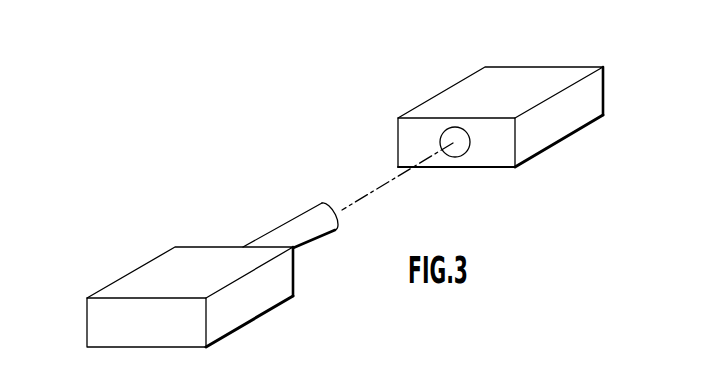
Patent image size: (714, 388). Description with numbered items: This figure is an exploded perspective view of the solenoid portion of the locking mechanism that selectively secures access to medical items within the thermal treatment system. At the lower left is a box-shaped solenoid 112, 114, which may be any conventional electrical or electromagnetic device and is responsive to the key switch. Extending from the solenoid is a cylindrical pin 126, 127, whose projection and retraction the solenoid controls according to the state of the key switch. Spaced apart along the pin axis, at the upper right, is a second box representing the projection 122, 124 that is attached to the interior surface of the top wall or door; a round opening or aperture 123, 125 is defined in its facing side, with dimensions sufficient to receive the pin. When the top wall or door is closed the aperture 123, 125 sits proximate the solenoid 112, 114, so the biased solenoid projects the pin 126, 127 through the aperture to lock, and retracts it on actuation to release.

The solenoid 112 is at (171, 286).
The solenoid 114 is at (165, 272).
The projection 122 is at (512, 90).
The projection 124 is at (515, 83).
The aperture 123 is at (399, 140).
The aperture 125 is at (442, 139).
The pin 126 is at (265, 209).
The pin 127 is at (281, 224).